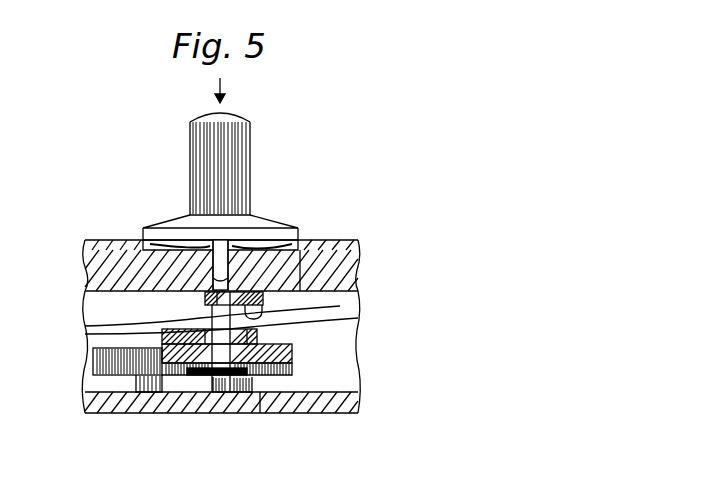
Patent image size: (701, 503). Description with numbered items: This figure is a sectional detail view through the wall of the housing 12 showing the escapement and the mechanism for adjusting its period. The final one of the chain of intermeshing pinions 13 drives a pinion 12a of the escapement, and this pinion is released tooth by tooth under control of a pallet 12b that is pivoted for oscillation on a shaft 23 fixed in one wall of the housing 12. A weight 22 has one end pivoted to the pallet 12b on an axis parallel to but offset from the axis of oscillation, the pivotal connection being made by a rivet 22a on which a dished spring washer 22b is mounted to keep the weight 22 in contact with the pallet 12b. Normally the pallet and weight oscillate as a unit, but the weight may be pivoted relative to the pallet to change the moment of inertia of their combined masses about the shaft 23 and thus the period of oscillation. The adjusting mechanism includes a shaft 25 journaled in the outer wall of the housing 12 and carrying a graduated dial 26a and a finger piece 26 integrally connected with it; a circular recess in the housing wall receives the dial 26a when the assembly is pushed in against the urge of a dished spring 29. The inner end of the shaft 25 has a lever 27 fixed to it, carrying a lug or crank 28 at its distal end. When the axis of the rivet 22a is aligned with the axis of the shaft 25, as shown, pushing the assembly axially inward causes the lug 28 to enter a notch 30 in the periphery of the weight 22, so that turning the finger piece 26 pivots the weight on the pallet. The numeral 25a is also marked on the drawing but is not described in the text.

The housing 12 is at (330, 377).
The pinion 12a is at (267, 400).
The pallet 12b is at (275, 352).
The intermeshing pinions 13 is at (93, 358).
The weight 22 is at (160, 327).
The rivet 22a is at (221, 320).
The dished spring washer 22b is at (180, 402).
The shaft 23 is at (210, 400).
The shaft 25 is at (215, 262).
The shaft bore 25a is at (300, 277).
The finger piece 26 is at (235, 150).
The graduated dial 26a is at (258, 220).
The lever 27 is at (205, 297).
The lug or crank 28 is at (258, 313).
The dished spring 29 is at (245, 253).
The notch 30 is at (255, 330).